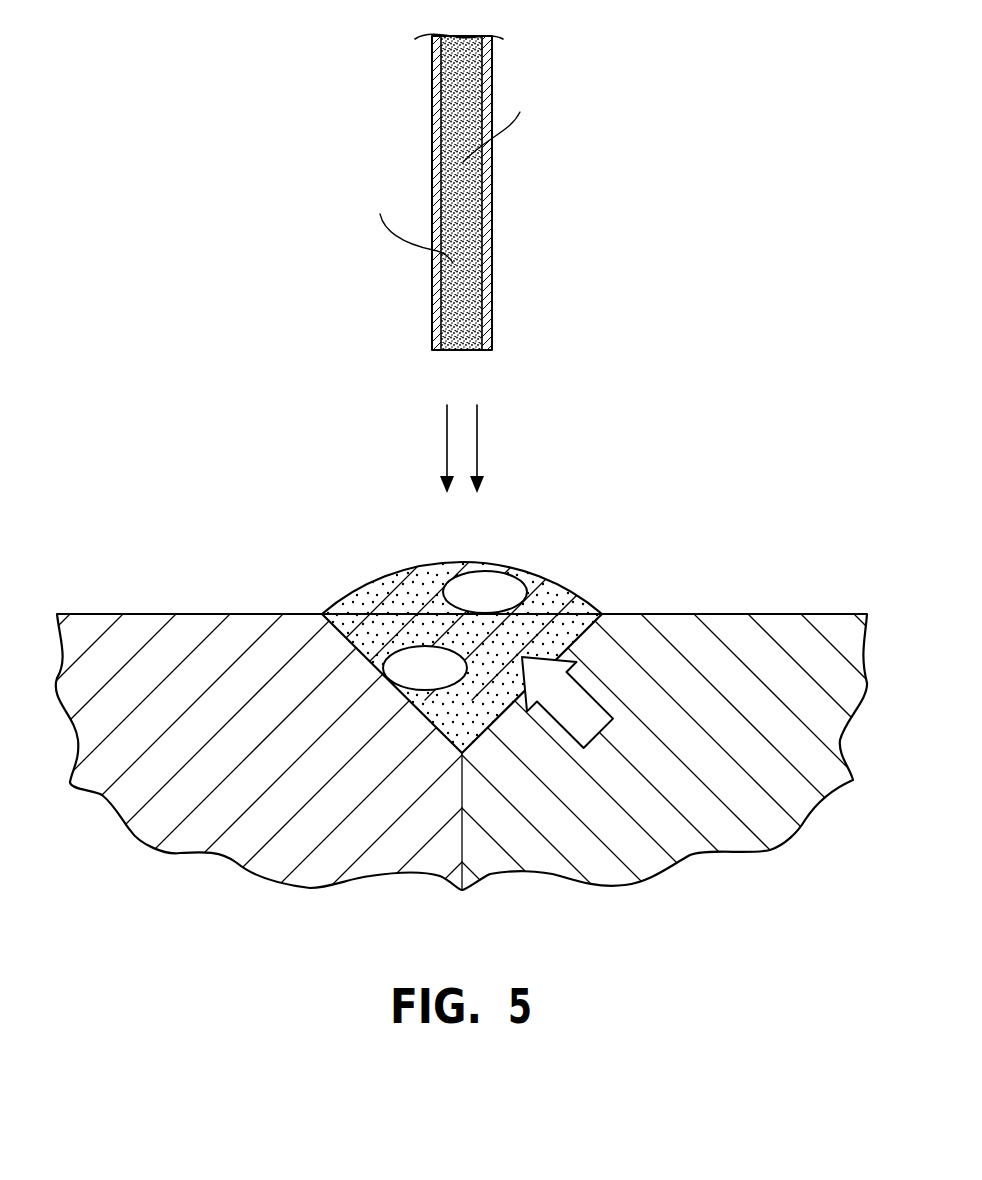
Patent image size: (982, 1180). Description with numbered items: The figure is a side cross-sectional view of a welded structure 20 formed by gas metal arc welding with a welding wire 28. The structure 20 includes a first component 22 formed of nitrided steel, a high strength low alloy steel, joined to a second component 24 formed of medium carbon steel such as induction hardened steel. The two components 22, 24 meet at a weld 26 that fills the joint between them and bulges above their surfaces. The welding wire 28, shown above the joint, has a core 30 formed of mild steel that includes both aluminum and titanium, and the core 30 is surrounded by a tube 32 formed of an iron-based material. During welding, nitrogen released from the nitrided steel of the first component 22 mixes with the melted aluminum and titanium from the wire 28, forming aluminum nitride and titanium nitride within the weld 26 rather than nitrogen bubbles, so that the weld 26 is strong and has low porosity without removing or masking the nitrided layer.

The welded structure 20 is at (704, 526).
The first component 22 is at (243, 613).
The second component 24 is at (775, 613).
The weld 26 is at (533, 573).
The welding wire 28 is at (437, 192).
The core 30 is at (468, 297).
The tube 32 is at (492, 222).